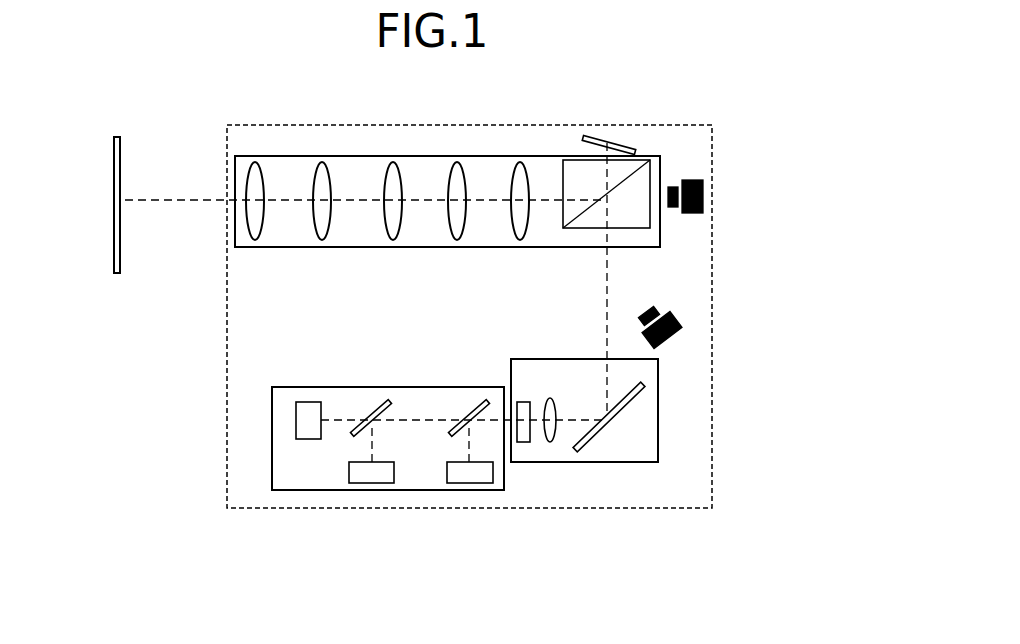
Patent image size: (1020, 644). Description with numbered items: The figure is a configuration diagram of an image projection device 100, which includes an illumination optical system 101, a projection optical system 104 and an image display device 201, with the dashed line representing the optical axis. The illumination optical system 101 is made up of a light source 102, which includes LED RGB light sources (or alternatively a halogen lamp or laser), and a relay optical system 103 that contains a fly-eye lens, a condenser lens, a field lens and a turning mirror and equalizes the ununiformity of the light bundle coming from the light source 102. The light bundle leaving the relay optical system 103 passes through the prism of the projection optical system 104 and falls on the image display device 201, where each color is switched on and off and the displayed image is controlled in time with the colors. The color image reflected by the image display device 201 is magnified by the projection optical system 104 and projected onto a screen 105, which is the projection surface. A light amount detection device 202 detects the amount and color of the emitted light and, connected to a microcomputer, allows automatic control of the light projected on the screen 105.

The image projection device 100 is at (711, 483).
The illumination optical system 101 is at (465, 476).
The light source 102 is at (485, 485).
The relay optical system 103 is at (530, 463).
The projection optical system 104 is at (458, 154).
The screen 105 is at (116, 273).
The image display device 201 is at (609, 150).
The light amount detection device 202 is at (673, 313).